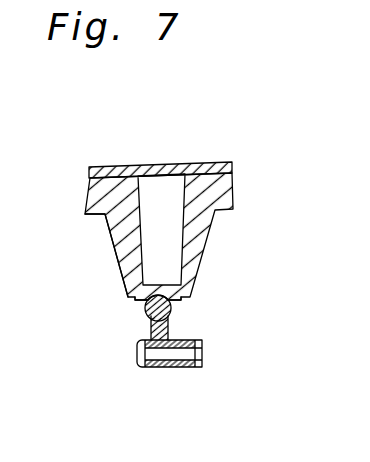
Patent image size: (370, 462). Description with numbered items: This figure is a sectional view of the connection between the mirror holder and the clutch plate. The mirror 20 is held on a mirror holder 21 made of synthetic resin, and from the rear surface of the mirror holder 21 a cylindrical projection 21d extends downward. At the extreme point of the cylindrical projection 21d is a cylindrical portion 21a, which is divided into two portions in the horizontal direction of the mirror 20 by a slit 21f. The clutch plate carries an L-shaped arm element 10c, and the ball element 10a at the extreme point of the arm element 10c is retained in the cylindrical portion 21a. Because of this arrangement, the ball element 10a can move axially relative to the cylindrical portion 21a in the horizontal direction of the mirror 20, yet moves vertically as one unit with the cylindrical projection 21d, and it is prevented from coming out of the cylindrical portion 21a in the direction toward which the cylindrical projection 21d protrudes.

The mirror 20 is at (175, 173).
The mirror holder 21 is at (214, 233).
The cylindrical projection 21d is at (123, 236).
The cylindrical portion 21a is at (143, 311).
The ball element 10a is at (158, 310).
The slit 21f is at (150, 338).
The arm element 10c is at (200, 364).